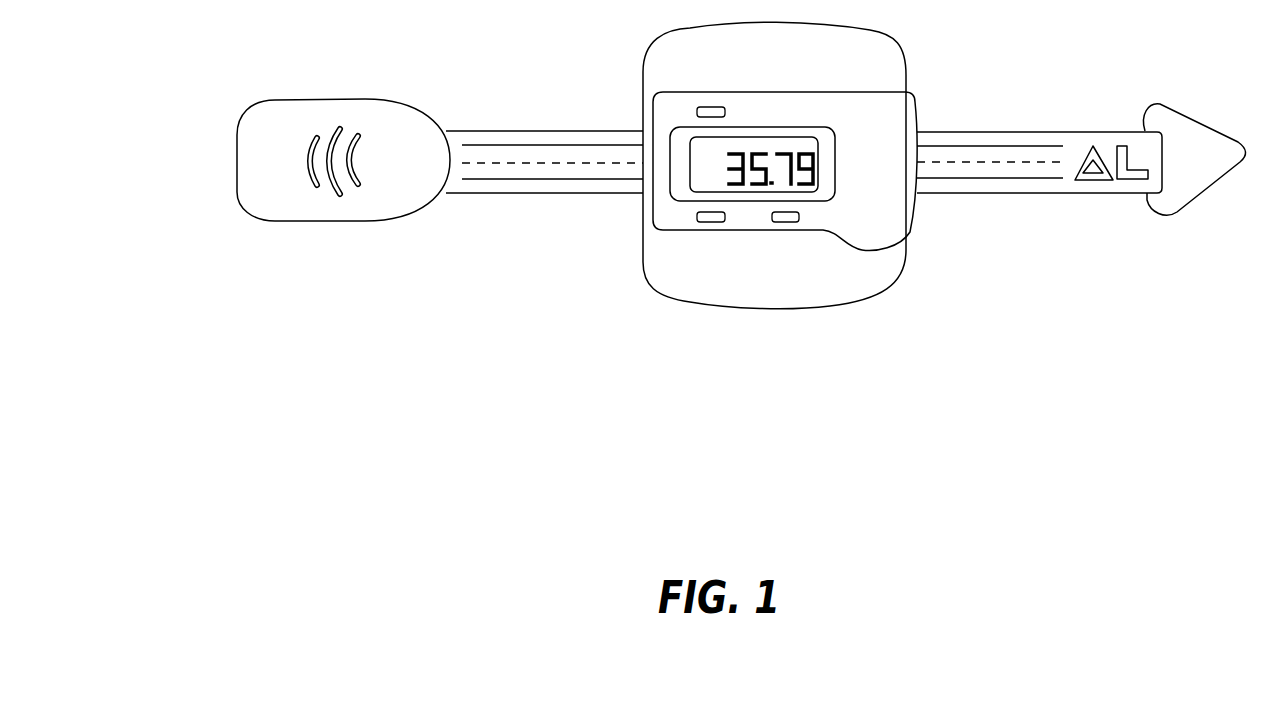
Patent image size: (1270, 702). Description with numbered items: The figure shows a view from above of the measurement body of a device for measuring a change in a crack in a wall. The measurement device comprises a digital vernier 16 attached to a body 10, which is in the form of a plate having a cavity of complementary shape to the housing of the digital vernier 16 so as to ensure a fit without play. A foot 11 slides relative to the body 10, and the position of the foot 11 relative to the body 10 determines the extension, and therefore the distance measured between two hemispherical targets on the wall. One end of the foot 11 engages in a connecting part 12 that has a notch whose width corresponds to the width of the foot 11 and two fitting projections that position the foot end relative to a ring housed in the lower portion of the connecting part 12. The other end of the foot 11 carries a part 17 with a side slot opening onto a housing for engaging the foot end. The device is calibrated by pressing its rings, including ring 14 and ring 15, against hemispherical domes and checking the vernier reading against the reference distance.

The body 10 is at (788, 287).
The foot 11 is at (1097, 193).
The connecting part 12 is at (373, 222).
The ring 14 is at (237, 192).
The ring 15 is at (372, 128).
The digital vernier 16 is at (852, 118).
The part 17 is at (1178, 135).